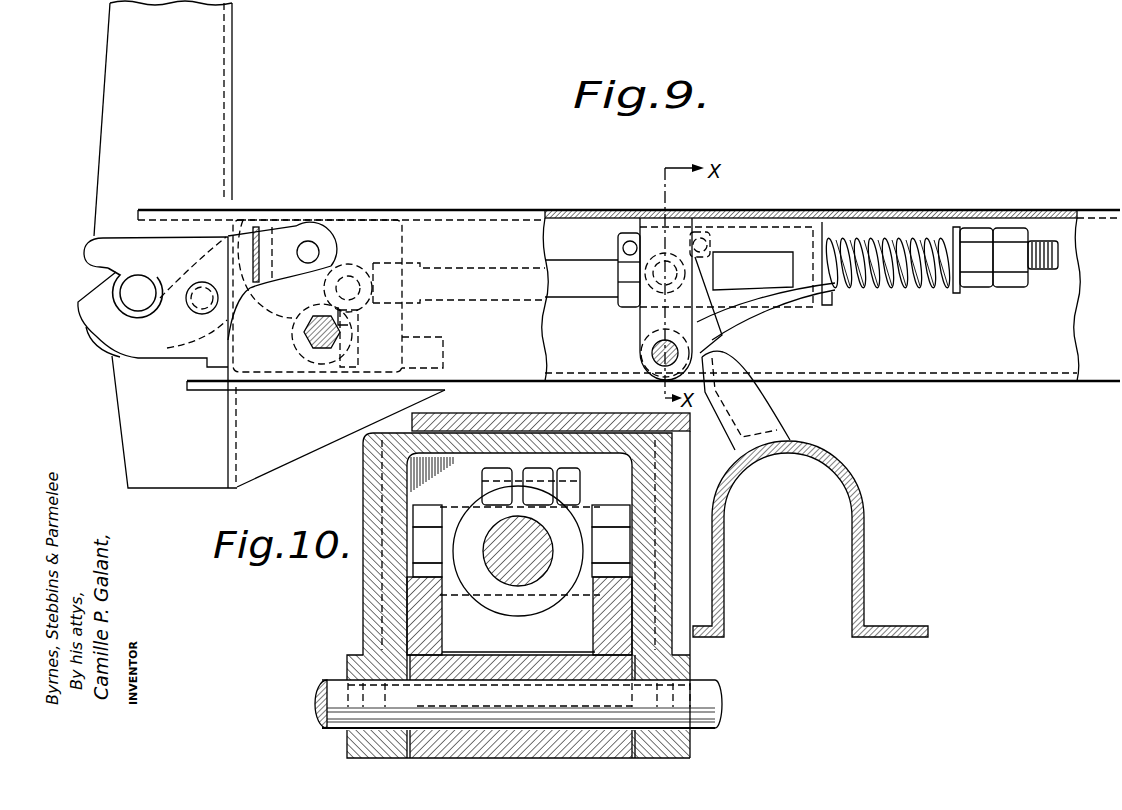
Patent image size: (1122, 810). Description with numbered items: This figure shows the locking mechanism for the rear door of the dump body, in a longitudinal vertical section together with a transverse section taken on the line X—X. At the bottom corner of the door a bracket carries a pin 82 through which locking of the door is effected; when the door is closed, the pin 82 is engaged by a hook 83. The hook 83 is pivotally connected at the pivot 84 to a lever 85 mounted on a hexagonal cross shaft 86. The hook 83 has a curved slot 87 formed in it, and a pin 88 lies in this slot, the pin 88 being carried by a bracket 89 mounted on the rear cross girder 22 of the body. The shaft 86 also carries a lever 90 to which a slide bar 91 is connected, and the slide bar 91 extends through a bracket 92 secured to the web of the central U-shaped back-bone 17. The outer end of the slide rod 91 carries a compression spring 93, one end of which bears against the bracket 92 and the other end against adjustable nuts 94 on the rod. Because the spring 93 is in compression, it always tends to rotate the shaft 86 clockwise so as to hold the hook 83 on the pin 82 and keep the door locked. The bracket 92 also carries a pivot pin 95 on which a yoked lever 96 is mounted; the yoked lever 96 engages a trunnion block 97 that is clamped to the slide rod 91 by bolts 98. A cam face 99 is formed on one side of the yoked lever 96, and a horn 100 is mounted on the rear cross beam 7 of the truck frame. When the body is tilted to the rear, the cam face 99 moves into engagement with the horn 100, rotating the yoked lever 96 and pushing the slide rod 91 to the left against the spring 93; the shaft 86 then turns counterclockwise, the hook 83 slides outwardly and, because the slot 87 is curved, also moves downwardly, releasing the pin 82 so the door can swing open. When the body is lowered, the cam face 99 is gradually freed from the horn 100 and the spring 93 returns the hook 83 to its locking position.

In FIG. 9, the cross beam 7 is at (864, 497).
In FIG. 9, the back-bone 17 is at (806, 212).
In FIG. 10, the back-bone 17 is at (560, 417).
In FIG. 9, the cross girder 22 is at (403, 340).
In FIG. 9, the pin 82 is at (134, 304).
In FIG. 9, the hook 83 is at (95, 303).
In FIG. 9, the pivot 84 is at (310, 248).
In FIG. 9, the lever 85 is at (335, 266).
In FIG. 9, the hexagonal cross shaft 86 is at (308, 342).
In FIG. 9, the curved slot 87 is at (235, 258).
In FIG. 9, the pin 88 is at (202, 302).
In FIG. 9, the bracket 89 is at (156, 252).
In FIG. 9, the lever 90 is at (353, 266).
In FIG. 9, the slide bar 91 is at (460, 272).
In FIG. 10, the slide bar 91 is at (525, 577).
In FIG. 9, the bracket 92 is at (750, 235).
In FIG. 10, the bracket 92 is at (372, 498).
In FIG. 9, the compression spring 93 is at (868, 238).
In FIG. 9, the adjustable nuts 94 is at (1003, 232).
In FIG. 9, the pivot pin 95 is at (652, 355).
In FIG. 10, the pivot pin 95 is at (342, 701).
In FIG. 9, the yoked lever 96 is at (641, 281).
In FIG. 10, the yoked lever 96 is at (423, 612).
In FIG. 9, the trunnion block 97 is at (641, 264).
In FIG. 10, the trunnion block 97 is at (425, 546).
In FIG. 9, the bolts 98 is at (618, 245).
In FIG. 10, the bolts 98 is at (574, 489).
In FIG. 9, the cam face 99 is at (720, 347).
In FIG. 10, the cam face 99 is at (578, 706).
In FIG. 9, the horn 100 is at (732, 370).